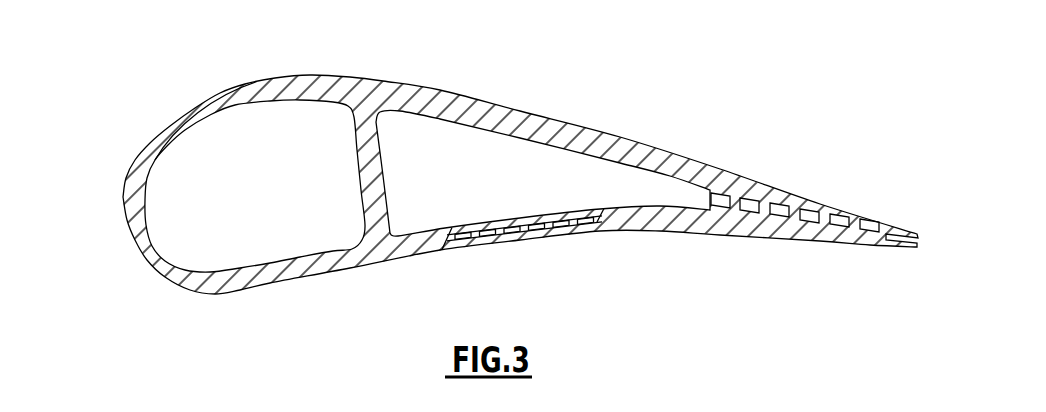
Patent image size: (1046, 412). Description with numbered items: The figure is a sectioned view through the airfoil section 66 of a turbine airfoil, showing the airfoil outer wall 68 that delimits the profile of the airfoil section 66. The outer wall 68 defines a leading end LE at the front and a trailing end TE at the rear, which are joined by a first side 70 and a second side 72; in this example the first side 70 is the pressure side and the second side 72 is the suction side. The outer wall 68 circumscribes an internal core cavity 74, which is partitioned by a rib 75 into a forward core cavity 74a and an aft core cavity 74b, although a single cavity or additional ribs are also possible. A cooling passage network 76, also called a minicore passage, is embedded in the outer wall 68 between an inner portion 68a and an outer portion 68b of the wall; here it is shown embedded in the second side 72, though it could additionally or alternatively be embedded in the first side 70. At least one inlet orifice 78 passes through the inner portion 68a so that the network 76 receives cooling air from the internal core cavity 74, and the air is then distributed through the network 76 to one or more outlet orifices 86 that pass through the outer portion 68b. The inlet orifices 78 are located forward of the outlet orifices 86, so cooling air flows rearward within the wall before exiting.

The airfoil section 66 is at (250, 302).
The airfoil outer wall 68 is at (520, 202).
The inner portion of the airfoil outer wall 68a is at (502, 228).
The outer portion of the airfoil outer wall 68b is at (508, 246).
The first side 70 is at (403, 254).
The second side 72 is at (383, 80).
The internal core cavity 74 is at (427, 192).
The forward core cavity 74a is at (257, 202).
The aft core cavity 74b is at (473, 179).
The rib 75 is at (354, 143).
The cooling passage network 76 is at (559, 239).
The inlet orifice 78 is at (462, 231).
The outlet orifice 86 is at (604, 228).
The leading end LE is at (114, 245).
The trailing end TE is at (917, 262).